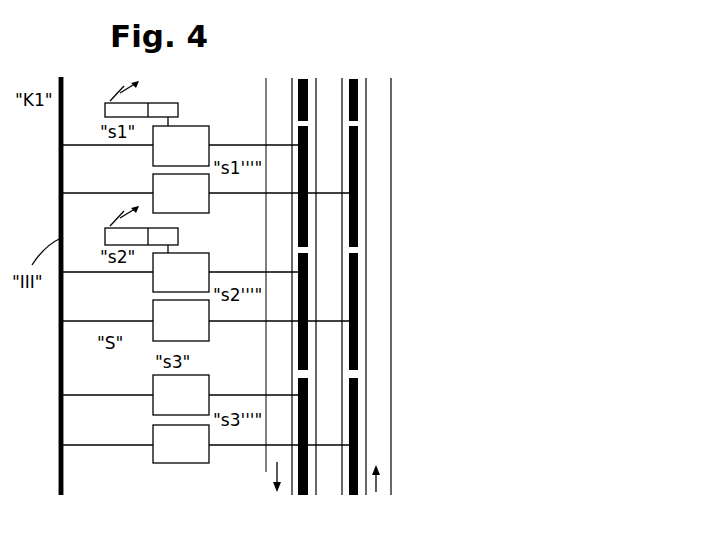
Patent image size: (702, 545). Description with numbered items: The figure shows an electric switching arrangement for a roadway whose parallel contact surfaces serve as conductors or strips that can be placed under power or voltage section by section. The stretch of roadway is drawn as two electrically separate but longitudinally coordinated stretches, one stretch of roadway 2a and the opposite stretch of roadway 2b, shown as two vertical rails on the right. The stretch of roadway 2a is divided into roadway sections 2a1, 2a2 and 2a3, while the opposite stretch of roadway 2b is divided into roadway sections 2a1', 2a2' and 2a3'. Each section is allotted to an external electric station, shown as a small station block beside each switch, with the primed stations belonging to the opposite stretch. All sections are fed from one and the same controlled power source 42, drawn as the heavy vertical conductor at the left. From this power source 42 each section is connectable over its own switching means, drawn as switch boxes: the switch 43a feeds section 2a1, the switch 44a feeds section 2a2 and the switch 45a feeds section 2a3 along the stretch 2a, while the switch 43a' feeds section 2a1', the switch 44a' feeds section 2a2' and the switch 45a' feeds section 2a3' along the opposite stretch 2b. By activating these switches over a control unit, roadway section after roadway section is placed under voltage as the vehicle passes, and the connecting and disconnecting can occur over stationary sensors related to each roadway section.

The roadway stretch 2a is at (303, 78).
The opposite roadway stretch 2b is at (363, 102).
The first roadway section 2a1 is at (261, 172).
The second roadway section 2a2 is at (261, 297).
The third roadway section 2a3 is at (261, 425).
The first opposite roadway section 2a1' is at (402, 186).
The second opposite roadway section 2a2' is at (402, 311).
The third opposite roadway section 2a3' is at (399, 436).
The controlled power source 42 is at (61, 210).
The switching means for first section 43a is at (179, 148).
The switching means for first opposite section 43a' is at (205, 193).
The switching means for second section 44a is at (179, 274).
The switching means for second opposite section 44a' is at (205, 319).
The switching means for third section 45a is at (179, 390).
The switching means for third opposite section 45a' is at (205, 438).